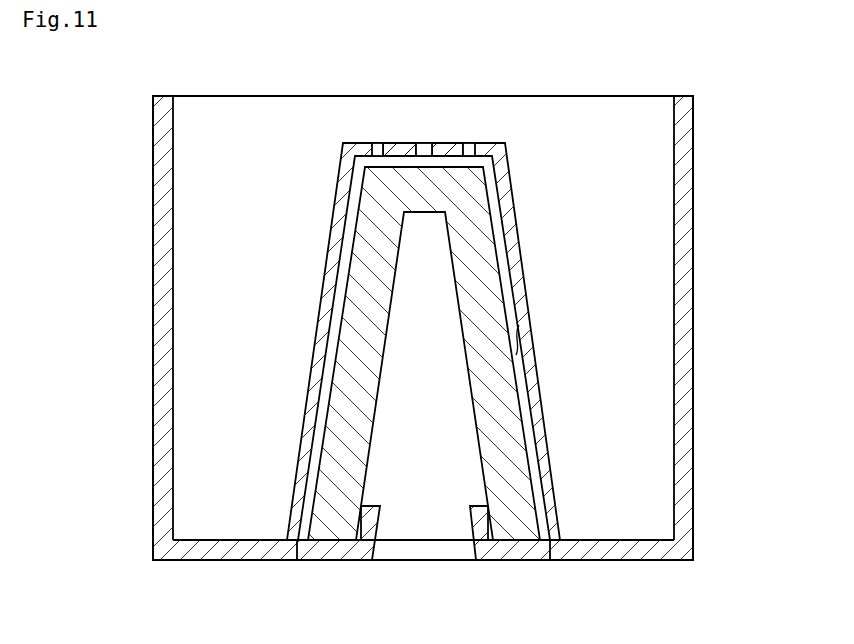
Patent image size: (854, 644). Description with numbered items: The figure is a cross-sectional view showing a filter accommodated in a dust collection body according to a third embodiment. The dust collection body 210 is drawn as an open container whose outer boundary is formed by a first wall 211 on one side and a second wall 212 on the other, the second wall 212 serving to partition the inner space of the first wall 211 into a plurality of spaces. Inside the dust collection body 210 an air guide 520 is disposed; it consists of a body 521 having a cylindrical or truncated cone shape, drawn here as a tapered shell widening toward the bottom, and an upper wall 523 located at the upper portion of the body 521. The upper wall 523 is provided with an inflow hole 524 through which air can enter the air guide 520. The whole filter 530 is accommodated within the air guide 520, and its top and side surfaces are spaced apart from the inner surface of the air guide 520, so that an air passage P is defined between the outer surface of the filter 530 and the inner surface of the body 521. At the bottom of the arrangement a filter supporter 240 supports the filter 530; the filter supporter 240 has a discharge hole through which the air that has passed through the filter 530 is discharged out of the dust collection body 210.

The dust collection body 210 is at (404, 328).
The first wall 211 is at (163, 198).
The second wall 212 is at (688, 247).
The filter supporter 240 is at (340, 554).
The air guide 520 is at (467, 303).
The body 521 is at (452, 303).
The upper wall 523 is at (401, 148).
The inflow hole 524 is at (470, 148).
The filter 530 is at (482, 223).
The air passage P is at (517, 337).